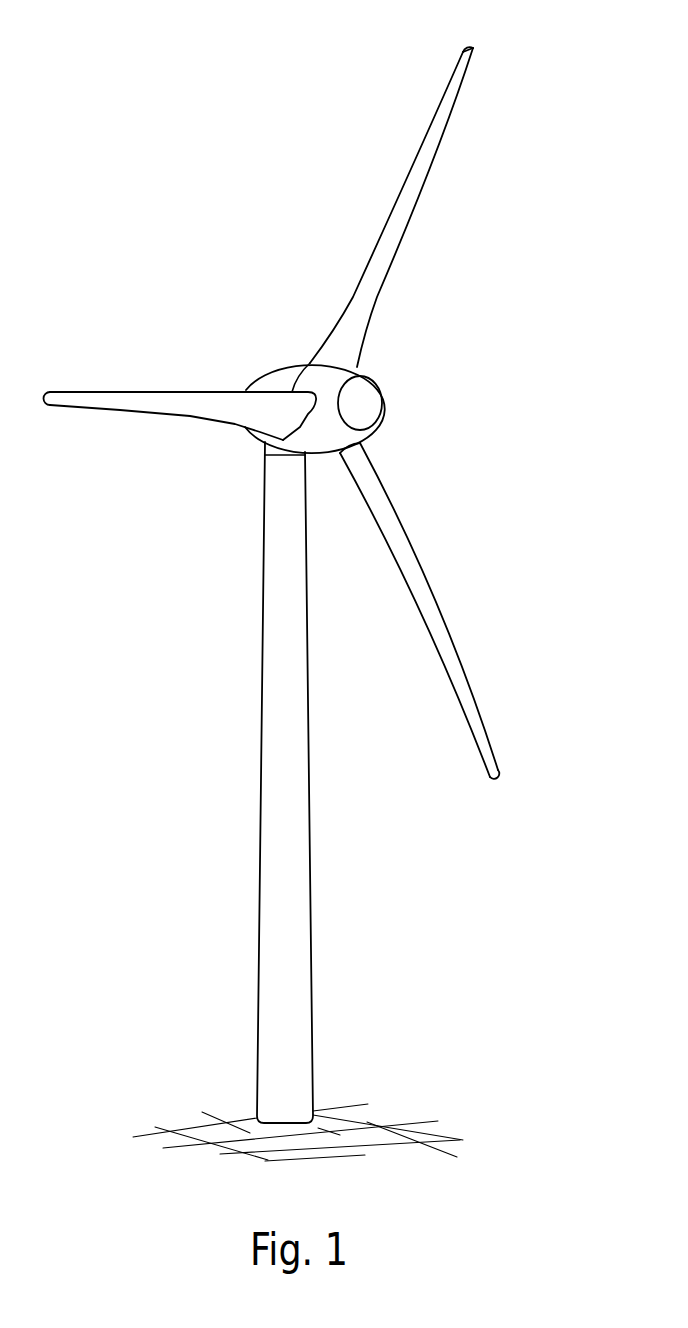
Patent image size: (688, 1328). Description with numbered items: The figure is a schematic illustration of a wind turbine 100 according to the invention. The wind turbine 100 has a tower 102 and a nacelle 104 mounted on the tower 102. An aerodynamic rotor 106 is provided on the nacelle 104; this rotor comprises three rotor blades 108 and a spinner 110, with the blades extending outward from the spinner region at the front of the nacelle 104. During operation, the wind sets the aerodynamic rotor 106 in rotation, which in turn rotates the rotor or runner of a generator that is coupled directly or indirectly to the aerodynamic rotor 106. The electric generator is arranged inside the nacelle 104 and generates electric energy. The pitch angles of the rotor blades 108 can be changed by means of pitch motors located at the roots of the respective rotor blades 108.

The wind turbine 100 is at (208, 535).
The tower 102 is at (303, 880).
The nacelle 104 is at (272, 382).
The aerodynamic rotor 106 is at (510, 308).
The rotor blades 108 is at (107, 398).
The spinner 110 is at (367, 403).